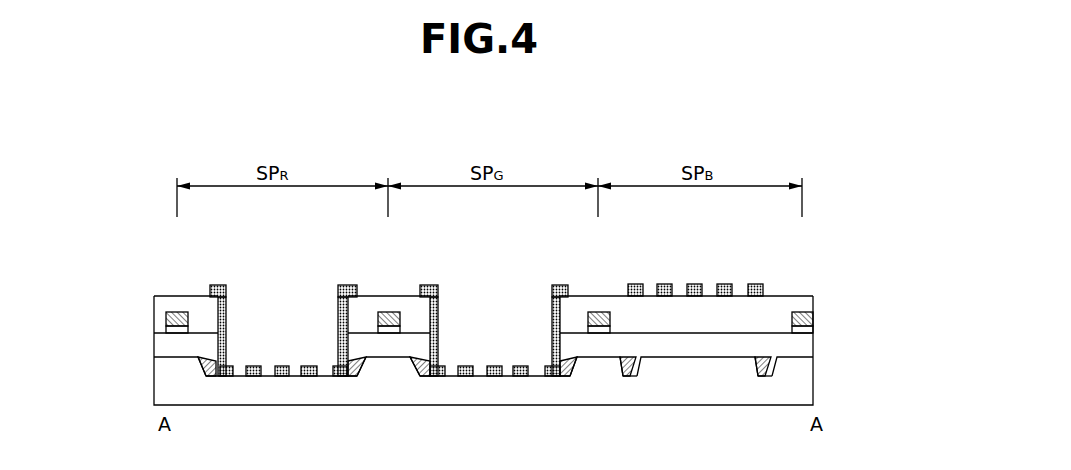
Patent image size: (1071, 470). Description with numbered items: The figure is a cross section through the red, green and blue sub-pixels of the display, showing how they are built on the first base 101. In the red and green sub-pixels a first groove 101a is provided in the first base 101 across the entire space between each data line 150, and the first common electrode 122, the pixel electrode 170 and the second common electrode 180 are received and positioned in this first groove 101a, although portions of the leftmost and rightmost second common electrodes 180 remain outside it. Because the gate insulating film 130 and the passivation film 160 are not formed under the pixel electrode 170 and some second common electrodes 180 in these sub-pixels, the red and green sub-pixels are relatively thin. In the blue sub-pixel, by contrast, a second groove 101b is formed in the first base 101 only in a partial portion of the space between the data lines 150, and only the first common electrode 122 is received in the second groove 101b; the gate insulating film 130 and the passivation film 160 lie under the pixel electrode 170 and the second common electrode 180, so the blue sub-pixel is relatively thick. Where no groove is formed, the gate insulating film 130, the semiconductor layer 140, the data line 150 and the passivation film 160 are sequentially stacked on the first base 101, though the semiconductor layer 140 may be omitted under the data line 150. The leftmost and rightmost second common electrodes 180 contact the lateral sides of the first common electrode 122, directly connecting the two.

The first base 101 is at (157, 382).
The first groove 101a is at (481, 392).
The second groove 101b is at (779, 377).
The first common electrode 122 is at (206, 379).
The gate insulating film 130 is at (157, 352).
The semiconductor layer 140 is at (166, 330).
The data line 150 is at (166, 316).
The passivation film 160 is at (157, 302).
The pixel electrode 170 is at (308, 378).
The second common electrode 180 is at (210, 288).